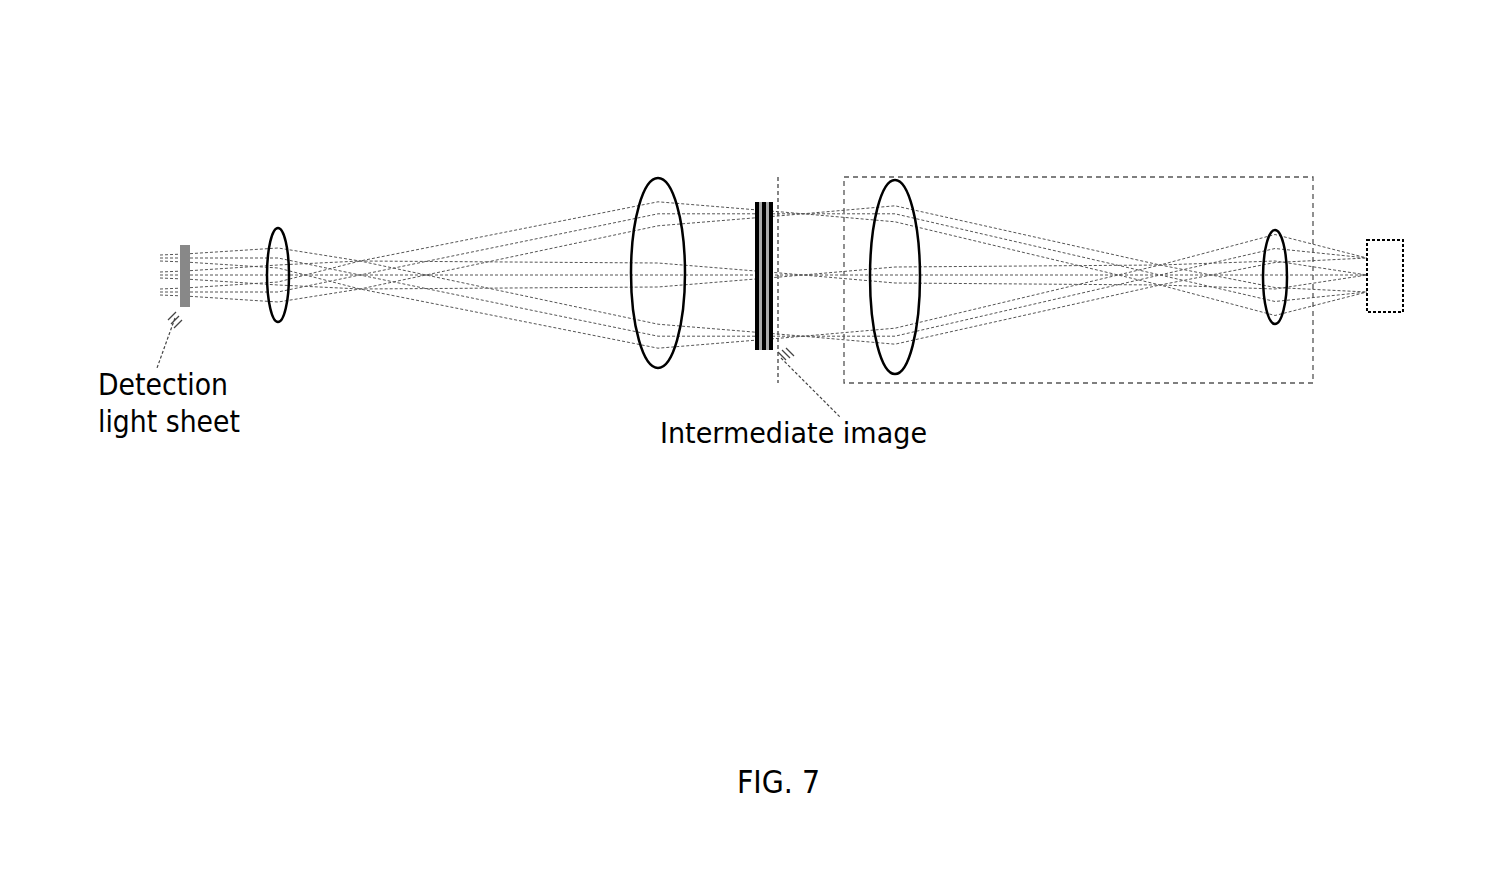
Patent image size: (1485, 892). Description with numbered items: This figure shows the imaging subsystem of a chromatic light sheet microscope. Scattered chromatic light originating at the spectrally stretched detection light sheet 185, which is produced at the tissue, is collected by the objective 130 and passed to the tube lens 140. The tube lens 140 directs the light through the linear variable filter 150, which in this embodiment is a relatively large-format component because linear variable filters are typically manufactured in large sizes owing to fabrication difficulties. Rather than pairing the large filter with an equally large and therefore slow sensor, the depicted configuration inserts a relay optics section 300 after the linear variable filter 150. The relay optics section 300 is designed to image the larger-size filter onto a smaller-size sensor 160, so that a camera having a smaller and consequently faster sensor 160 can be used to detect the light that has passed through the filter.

The light sheet 185 is at (188, 227).
The objective 130 is at (283, 330).
The tube lens 140 is at (635, 185).
The linear variable filter 150 is at (755, 320).
The relay optics section 300 is at (1182, 168).
The sensor 160 is at (1383, 227).